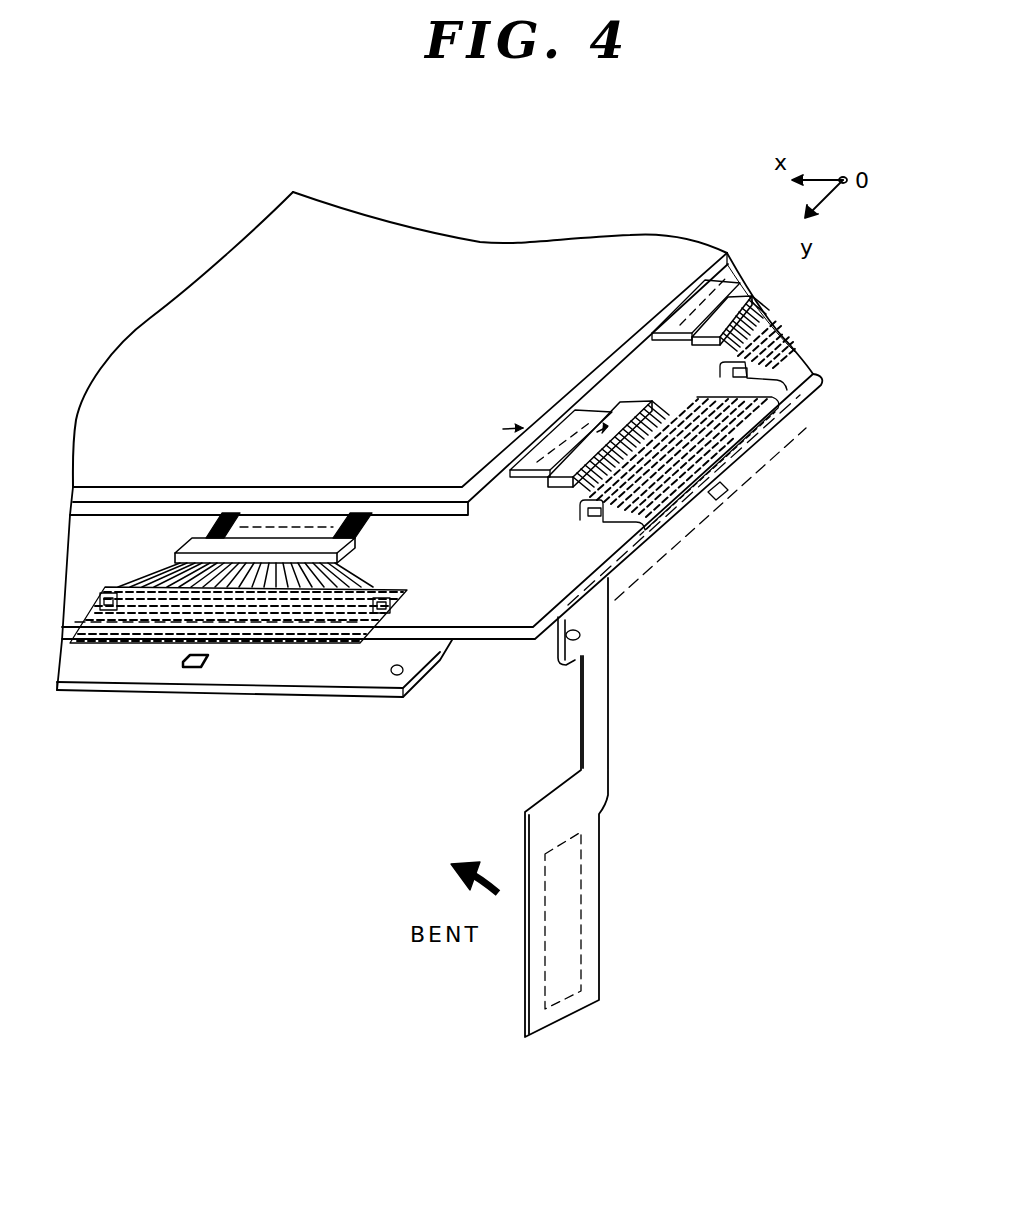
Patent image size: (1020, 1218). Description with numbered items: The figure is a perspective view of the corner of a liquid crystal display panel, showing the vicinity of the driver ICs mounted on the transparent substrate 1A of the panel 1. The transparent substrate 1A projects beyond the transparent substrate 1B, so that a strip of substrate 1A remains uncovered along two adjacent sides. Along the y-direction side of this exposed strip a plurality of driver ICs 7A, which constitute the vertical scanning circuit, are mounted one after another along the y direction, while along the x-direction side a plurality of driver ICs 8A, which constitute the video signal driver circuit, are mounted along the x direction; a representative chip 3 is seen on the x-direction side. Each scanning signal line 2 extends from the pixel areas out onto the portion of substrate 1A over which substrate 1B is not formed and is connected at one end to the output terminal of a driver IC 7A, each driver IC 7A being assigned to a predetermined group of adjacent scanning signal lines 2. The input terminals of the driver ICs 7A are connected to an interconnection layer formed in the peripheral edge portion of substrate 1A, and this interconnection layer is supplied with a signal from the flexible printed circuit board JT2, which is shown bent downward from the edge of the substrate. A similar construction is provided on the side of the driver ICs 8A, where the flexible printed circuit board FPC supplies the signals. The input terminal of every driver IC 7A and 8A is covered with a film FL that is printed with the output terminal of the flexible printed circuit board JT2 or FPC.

The transparent substrate 1 is at (425, 218).
The transparent substrate 1A is at (500, 628).
The transparent substrate 1B is at (478, 484).
The scanning signal lines 2 is at (668, 343).
The semiconductor chip 3 is at (368, 530).
The driver ICs 7A is at (720, 318).
The driver ICs 8A is at (275, 546).
The film FL is at (410, 598).
The flexible printed circuit board FPC is at (262, 690).
The flexible printed circuit board JT2 is at (598, 770).